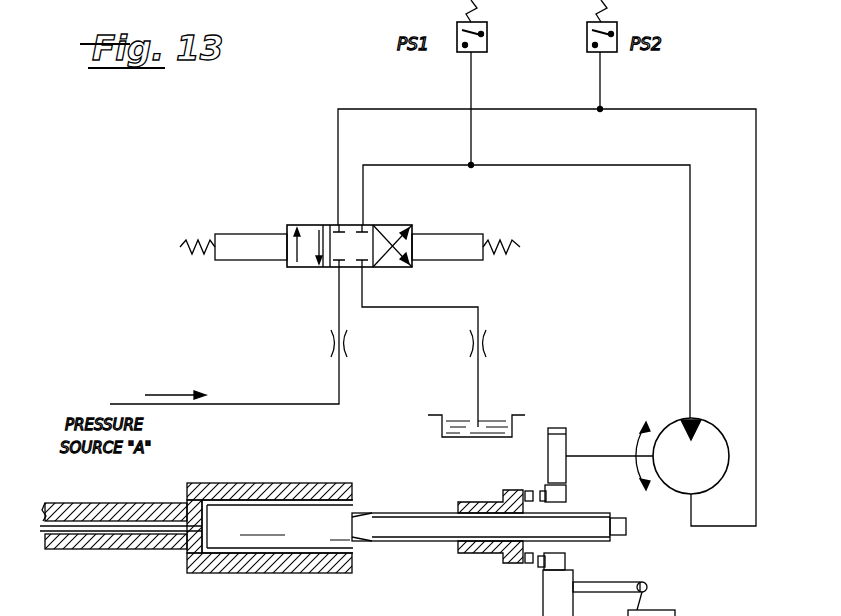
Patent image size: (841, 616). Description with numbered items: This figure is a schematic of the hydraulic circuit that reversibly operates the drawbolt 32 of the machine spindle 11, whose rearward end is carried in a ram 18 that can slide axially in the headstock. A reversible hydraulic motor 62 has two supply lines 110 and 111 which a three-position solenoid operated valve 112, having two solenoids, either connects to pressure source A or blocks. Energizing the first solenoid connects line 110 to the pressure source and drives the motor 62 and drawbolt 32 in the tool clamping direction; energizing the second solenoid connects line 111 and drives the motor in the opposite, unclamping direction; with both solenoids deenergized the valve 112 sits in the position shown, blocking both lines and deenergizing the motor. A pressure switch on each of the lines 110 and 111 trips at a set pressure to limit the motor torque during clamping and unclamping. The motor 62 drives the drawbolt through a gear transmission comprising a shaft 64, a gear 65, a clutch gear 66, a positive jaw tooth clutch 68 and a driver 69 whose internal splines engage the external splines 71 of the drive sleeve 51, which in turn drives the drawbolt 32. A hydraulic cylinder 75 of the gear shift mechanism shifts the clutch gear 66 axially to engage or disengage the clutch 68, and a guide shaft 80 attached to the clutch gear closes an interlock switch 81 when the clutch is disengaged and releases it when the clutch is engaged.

The spindle 11 is at (103, 490).
The ram 18 is at (206, 492).
The drawbolt 32 is at (114, 531).
The drive sleeve 51 is at (400, 545).
The hydraulic motor 62 is at (666, 432).
The shaft 64 is at (592, 452).
The gear 65 is at (556, 446).
The clutch gear 66 is at (566, 498).
The positive jaw tooth clutch 68 is at (531, 490).
The driver 69 is at (490, 508).
The external splines 71 is at (577, 593).
The hydraulic cylinder 75 is at (716, 610).
The guide shaft 80 is at (628, 582).
The interlock switch 81 is at (642, 598).
The supply line 110 is at (616, 165).
The supply line 111 is at (686, 110).
The three-position solenoid operated valve 112 is at (293, 225).